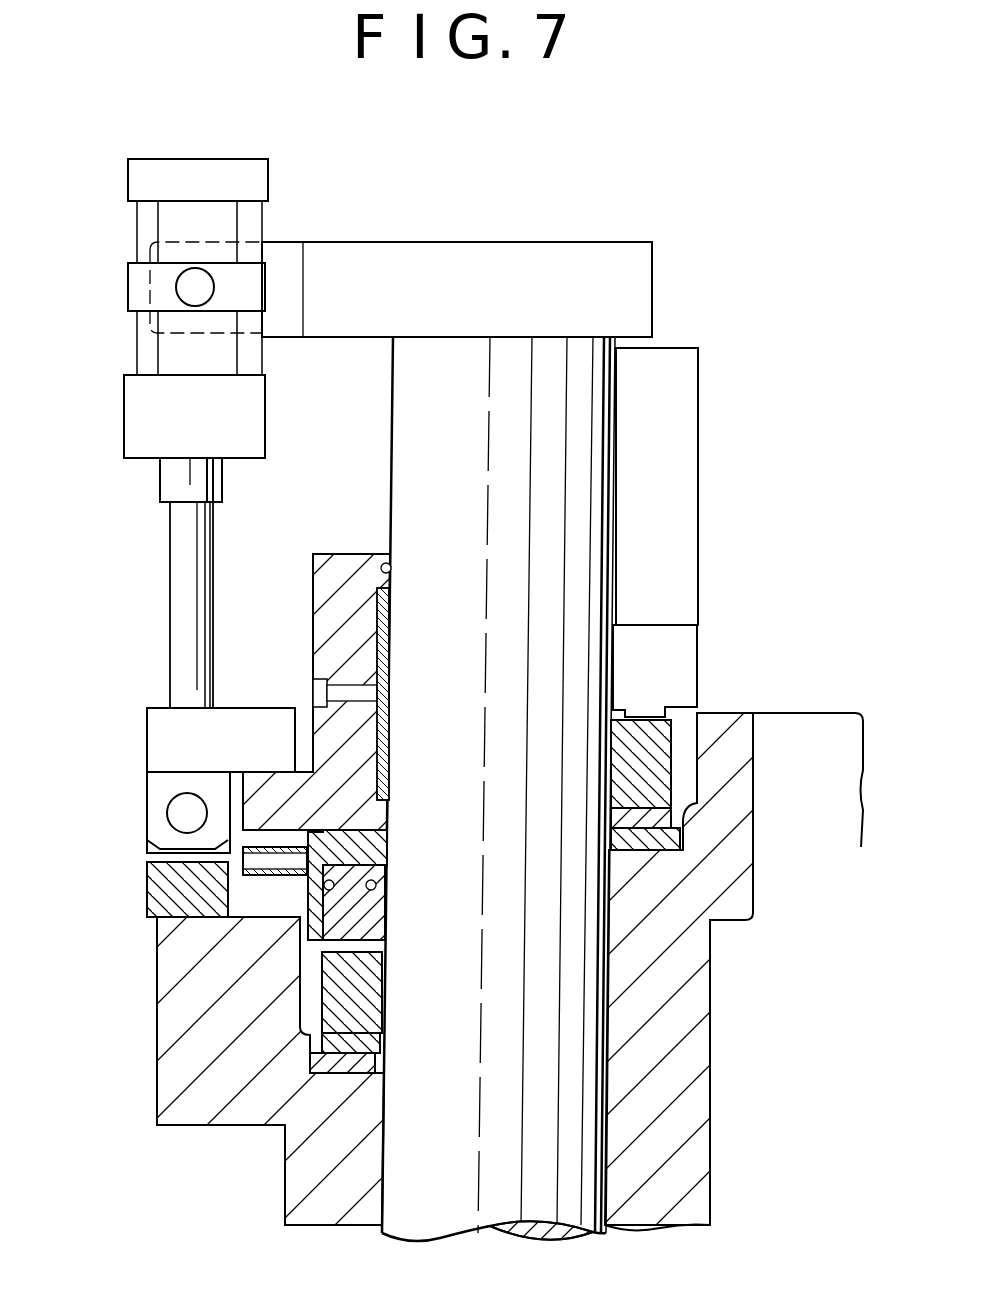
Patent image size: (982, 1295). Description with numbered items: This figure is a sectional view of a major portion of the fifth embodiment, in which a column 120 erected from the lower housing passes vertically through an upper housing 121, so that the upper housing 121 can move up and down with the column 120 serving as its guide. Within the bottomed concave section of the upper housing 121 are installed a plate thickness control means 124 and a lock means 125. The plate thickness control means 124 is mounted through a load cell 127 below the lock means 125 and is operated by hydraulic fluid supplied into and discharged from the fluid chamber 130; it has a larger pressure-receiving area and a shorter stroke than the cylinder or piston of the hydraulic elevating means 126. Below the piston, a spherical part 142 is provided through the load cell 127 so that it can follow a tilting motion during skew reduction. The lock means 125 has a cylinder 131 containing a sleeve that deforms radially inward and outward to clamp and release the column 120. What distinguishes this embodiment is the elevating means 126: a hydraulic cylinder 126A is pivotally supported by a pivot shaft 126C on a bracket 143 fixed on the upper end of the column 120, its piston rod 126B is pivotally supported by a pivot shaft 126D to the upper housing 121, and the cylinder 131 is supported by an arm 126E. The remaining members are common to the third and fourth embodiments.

The column 120 is at (587, 1095).
The upper housing 121 is at (157, 1015).
The plate thickness control means 124 is at (303, 897).
The lock means 125 is at (393, 638).
The hydraulic elevating means 126 is at (158, 538).
The hydraulic cylinder 126A is at (135, 340).
The piston rod 126B is at (180, 648).
The pivot shaft 126C is at (190, 278).
The pivot shaft 126D is at (187, 813).
The arm 126E is at (165, 737).
The load cell 127 is at (340, 985).
The fluid chamber 130 is at (320, 850).
The cylinder 131 is at (325, 597).
The spherical part 142 is at (330, 1045).
The bracket 143 is at (383, 258).